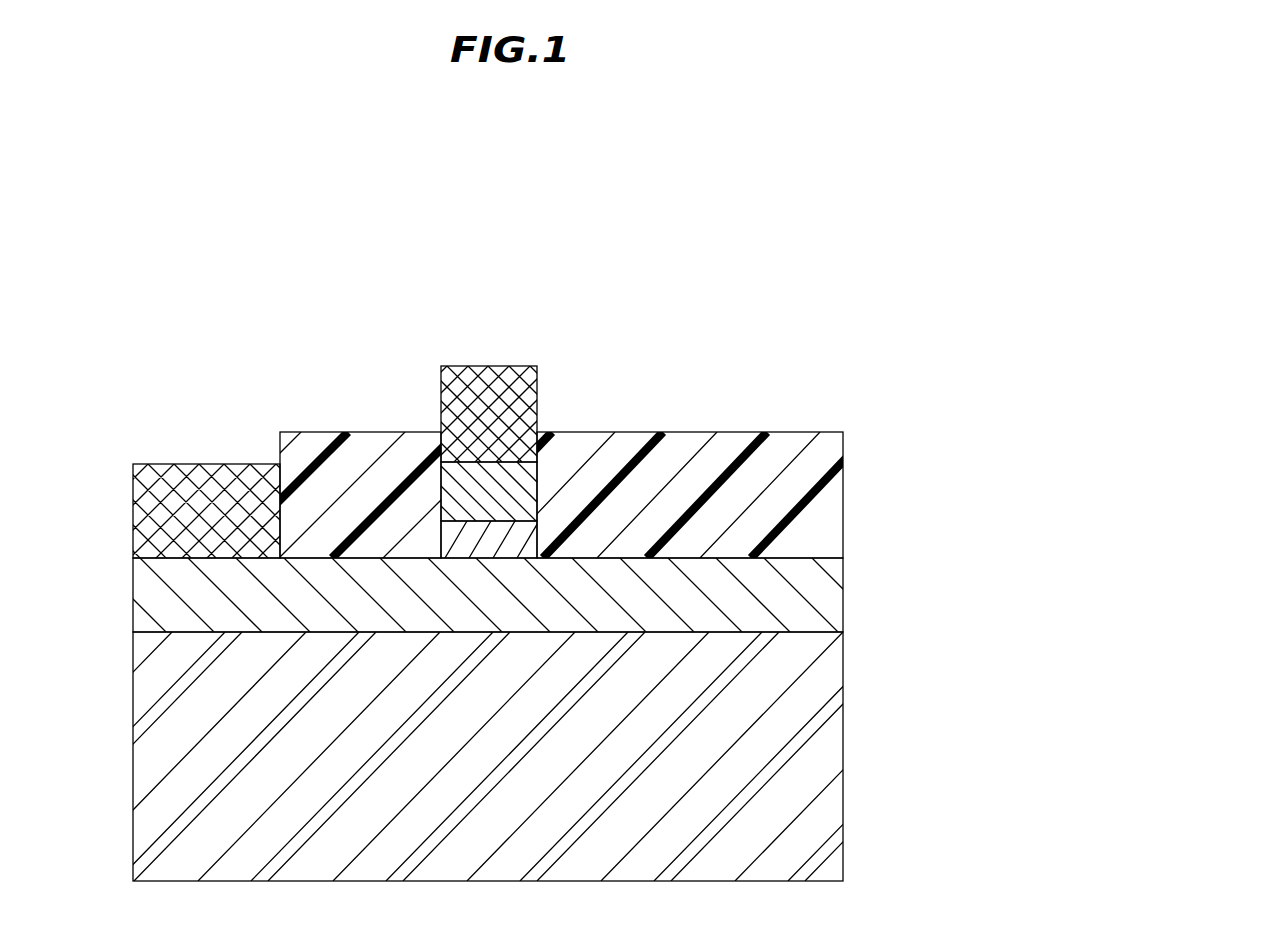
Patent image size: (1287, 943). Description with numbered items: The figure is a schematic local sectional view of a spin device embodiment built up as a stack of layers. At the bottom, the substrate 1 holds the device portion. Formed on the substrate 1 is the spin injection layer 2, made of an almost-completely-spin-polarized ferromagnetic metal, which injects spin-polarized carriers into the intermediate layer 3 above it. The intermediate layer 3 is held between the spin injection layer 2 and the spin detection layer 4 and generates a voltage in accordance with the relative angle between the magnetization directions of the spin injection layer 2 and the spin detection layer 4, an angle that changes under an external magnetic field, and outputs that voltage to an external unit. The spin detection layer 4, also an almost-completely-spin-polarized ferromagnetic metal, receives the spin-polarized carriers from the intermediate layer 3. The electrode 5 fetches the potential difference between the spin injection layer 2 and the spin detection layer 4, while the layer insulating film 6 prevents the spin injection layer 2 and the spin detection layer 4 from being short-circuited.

The substrate 1 is at (845, 717).
The spin injection layer 2 is at (838, 588).
The intermediate layer 3 is at (507, 535).
The spin detection layer 4 is at (535, 482).
The electrode 5 is at (183, 463).
The layer insulating film 6 is at (370, 432).